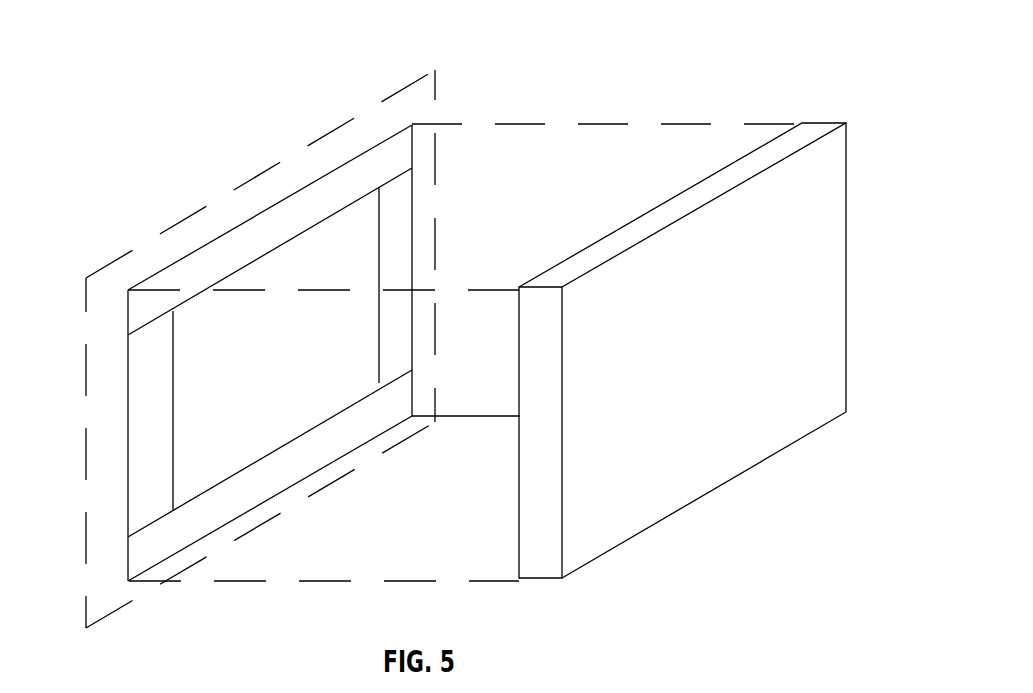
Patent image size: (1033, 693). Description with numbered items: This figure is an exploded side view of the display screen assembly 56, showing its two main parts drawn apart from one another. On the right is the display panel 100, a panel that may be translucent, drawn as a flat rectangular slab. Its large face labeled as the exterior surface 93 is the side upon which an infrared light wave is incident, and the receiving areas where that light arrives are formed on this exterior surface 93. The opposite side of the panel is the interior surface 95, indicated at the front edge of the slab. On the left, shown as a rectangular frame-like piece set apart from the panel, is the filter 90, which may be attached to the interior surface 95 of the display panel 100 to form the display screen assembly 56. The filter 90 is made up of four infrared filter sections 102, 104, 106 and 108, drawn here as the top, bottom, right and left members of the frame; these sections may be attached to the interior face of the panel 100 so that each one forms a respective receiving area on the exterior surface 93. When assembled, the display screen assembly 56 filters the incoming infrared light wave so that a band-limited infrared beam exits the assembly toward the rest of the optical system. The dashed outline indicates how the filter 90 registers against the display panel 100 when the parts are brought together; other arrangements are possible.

The display screen assembly 56 is at (653, 93).
The filter 90 is at (177, 222).
The exterior surface 93 is at (717, 365).
The interior surface 95 is at (520, 488).
The display panel 100 is at (687, 380).
The infrared filter section 102 is at (350, 175).
The infrared filter section 104 is at (185, 525).
The infrared filter section 106 is at (397, 277).
The infrared filter section 108 is at (147, 460).